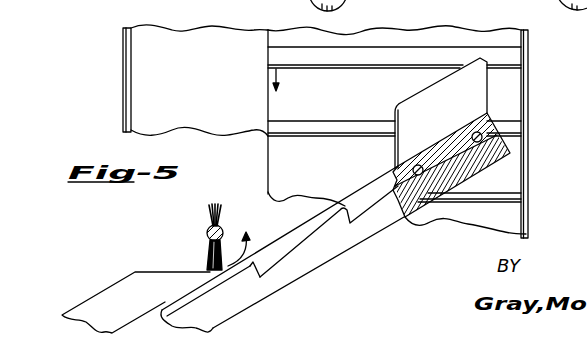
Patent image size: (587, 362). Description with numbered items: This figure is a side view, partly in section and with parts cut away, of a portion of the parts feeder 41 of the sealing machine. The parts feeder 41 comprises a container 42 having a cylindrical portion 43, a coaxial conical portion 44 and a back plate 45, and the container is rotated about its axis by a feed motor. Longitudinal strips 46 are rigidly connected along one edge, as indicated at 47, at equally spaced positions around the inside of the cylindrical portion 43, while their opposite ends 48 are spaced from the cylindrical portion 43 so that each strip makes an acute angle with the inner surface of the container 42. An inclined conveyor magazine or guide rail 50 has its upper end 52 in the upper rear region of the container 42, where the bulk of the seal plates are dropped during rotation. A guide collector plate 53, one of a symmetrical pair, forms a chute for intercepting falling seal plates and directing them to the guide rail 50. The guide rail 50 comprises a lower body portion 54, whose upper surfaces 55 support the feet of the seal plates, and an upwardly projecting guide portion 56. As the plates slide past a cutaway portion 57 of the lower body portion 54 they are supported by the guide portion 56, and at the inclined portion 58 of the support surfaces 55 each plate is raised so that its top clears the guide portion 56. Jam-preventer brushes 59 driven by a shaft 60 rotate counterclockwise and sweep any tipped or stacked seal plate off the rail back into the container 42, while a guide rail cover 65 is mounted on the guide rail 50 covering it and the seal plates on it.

The parts feeder 41 is at (88, 124).
The container 42 is at (268, 30).
The cylindrical portion 43 is at (440, 30).
The left side plate 44 is at (146, 73).
The back plate 45 is at (530, 40).
The longitudinal strips 46 is at (297, 57).
The connected edge 47 is at (405, 47).
The opposite ends 48 is at (358, 68).
The guide rail 50 is at (355, 252).
The upper end 52 is at (484, 119).
The guide collector plates 53 is at (473, 92).
The lower body portion 54 is at (228, 314).
The upper surfaces 55 is at (180, 300).
The upwardly projecting guide portion 56 is at (302, 223).
The cutaway portion 57 is at (313, 234).
The inclined portion 58 is at (252, 268).
The jam-preventer brushes 59 is at (222, 201).
The shaft 60 is at (207, 229).
The guide rail cover 65 is at (97, 303).